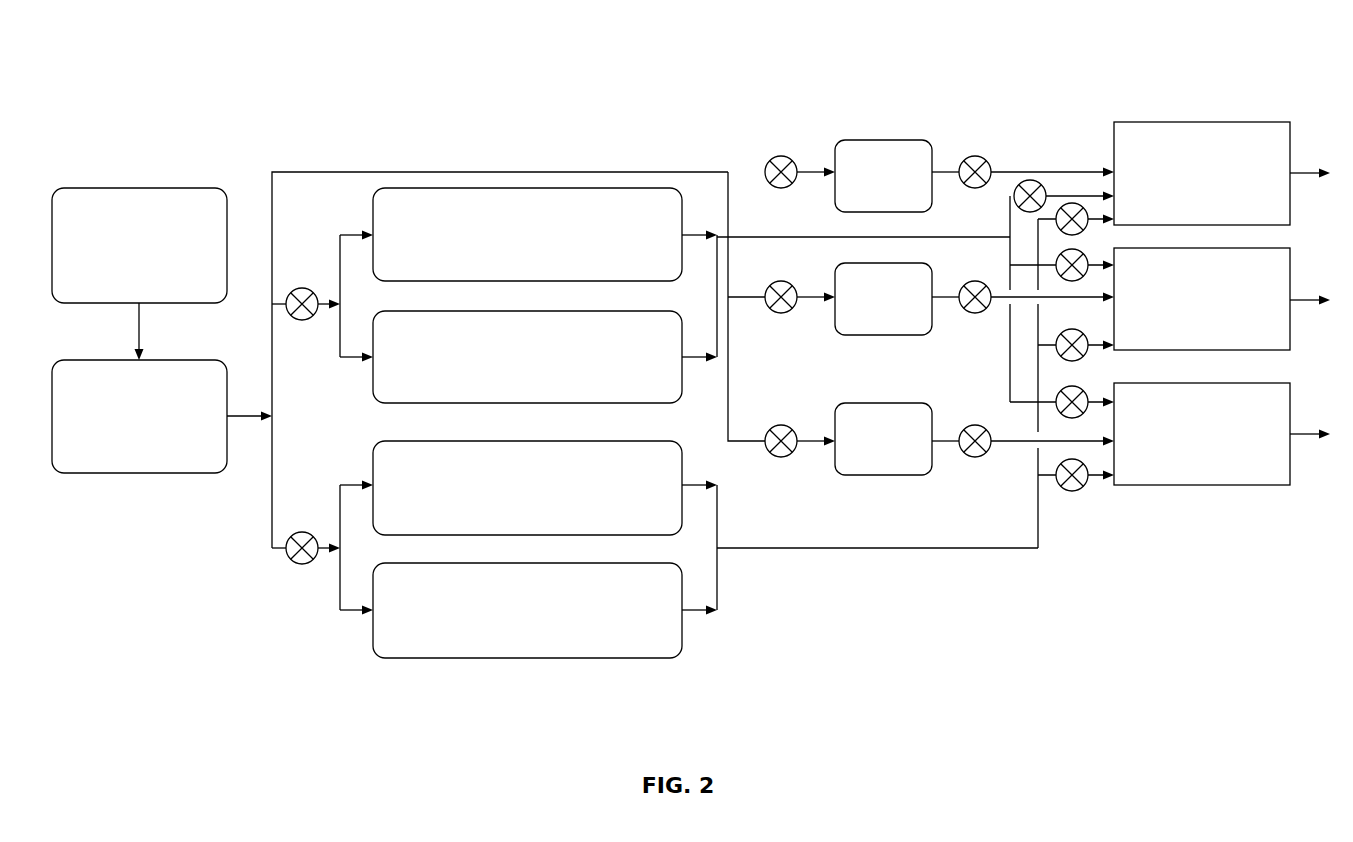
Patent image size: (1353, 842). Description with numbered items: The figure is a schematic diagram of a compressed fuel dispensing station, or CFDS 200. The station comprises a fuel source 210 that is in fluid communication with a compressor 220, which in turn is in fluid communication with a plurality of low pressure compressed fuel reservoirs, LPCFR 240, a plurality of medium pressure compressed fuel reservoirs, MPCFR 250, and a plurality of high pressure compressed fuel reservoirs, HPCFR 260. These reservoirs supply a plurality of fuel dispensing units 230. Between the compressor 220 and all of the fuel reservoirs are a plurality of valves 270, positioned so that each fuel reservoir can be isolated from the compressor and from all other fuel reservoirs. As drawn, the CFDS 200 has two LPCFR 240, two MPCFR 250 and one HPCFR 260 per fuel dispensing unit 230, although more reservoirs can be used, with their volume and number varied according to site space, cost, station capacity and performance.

The compressed fuel dispensing station (CFDS) 200 is at (195, 112).
The fuel source 210 is at (139, 245).
The compressor 220 is at (139, 416).
The fuel dispensing unit 230 is at (1202, 303).
The low pressure compressed fuel reservoir (LPCFR) 240 is at (527, 549).
The medium pressure compressed fuel reservoir (MPCFR) 250 is at (527, 295).
The high pressure compressed fuel reservoir (HPCFR) 260 is at (883, 307).
The valve 270 is at (968, 146).